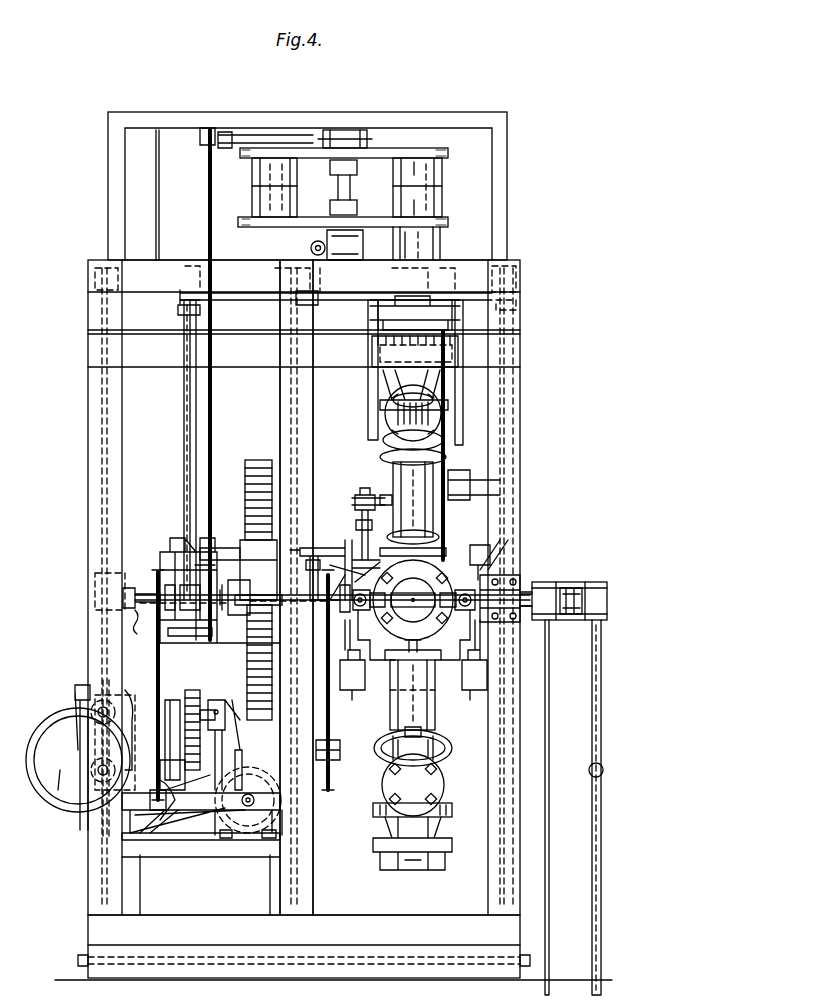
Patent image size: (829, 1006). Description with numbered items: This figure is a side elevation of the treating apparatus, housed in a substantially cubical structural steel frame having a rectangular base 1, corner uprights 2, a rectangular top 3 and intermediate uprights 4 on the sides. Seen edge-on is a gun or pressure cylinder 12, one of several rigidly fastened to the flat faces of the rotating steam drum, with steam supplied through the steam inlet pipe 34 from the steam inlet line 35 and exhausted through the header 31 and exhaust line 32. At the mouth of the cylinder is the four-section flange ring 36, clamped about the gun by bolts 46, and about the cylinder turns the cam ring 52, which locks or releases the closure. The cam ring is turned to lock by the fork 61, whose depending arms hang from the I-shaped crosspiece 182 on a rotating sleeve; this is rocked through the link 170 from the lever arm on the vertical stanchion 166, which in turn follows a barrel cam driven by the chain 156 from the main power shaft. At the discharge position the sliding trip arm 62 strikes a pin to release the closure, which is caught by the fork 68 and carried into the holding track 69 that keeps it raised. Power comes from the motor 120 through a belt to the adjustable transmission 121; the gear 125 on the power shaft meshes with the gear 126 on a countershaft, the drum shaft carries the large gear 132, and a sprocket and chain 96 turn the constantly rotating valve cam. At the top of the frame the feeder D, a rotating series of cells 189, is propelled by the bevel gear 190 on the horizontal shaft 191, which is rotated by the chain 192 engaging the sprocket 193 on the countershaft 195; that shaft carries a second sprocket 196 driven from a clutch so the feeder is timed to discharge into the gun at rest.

The rectangular base 1 is at (398, 919).
The corner uprights 2 is at (115, 878).
The rectangular top 3 is at (512, 271).
The intermediate uprights 4 is at (308, 867).
The gun or pressure cylinder 12 is at (392, 477).
The header 31 is at (545, 583).
The exhaust line 32 is at (549, 779).
The steam inlet pipe 34 is at (570, 585).
The steam inlet line 35 is at (602, 770).
The flange ring 36 is at (385, 419).
The bolts 46 is at (346, 497).
The cam ring 52 is at (446, 745).
The fork 61 is at (368, 382).
The sliding trip arm 62 is at (314, 543).
The fork 68 is at (490, 547).
The holding track 69 is at (448, 471).
The sprocket and chain 96 is at (326, 719).
The motor 120 is at (234, 831).
The transmission 121 is at (80, 687).
The gear 125 is at (201, 845).
The gear 126 is at (193, 691).
The large gear 132 is at (258, 459).
The chain 156 is at (162, 661).
The vertical pipe or stanchion 166 is at (183, 406).
The link 170 is at (238, 309).
The I-shaped crosspiece 182 is at (465, 300).
The cells or pockets 189 is at (296, 186).
The bevel gear 190 is at (370, 140).
The horizontal shaft 191 is at (262, 137).
The chain 192 is at (205, 198).
The sprocket 193 is at (211, 559).
The countershaft 195 is at (127, 603).
The second sprocket 196 is at (150, 568).
The feeder D is at (443, 178).